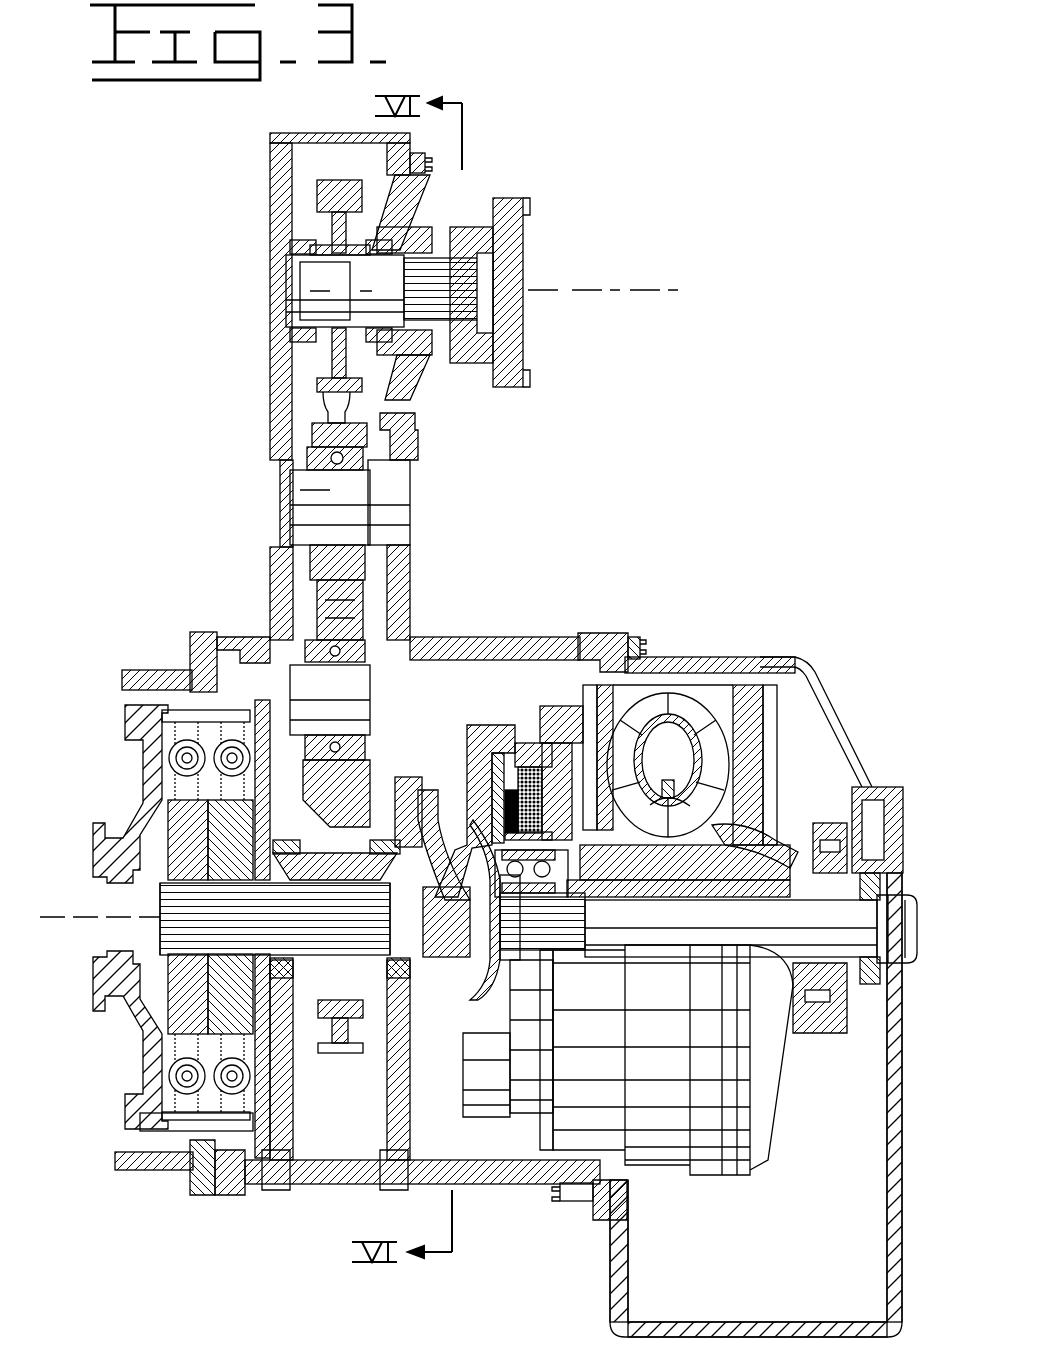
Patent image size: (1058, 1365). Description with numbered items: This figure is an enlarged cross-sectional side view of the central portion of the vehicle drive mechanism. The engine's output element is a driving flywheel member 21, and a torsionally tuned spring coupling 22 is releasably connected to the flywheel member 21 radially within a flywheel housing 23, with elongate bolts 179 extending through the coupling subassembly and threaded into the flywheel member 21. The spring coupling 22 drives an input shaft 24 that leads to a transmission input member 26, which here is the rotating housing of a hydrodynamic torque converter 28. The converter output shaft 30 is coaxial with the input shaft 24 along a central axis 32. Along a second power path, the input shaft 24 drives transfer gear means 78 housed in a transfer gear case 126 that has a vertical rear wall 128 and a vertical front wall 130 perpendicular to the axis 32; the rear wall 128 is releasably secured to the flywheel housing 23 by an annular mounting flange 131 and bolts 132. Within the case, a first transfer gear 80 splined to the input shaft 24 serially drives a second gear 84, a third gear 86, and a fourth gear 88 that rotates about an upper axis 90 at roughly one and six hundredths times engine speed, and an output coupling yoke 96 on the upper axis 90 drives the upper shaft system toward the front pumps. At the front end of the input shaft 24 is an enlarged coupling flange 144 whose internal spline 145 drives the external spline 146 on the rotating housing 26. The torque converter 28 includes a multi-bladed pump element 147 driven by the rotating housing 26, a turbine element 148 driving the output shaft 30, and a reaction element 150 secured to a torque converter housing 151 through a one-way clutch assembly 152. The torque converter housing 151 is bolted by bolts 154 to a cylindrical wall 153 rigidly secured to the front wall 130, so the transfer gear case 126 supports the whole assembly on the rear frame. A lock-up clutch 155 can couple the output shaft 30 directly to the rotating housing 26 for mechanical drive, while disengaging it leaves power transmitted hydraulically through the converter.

The flywheel member 21 is at (150, 764).
The torsionally tuned spring coupling 22 is at (160, 1074).
The flywheel housing 23 is at (140, 1172).
The input shaft 24 is at (125, 935).
The transmission input member 26 is at (570, 715).
The hydrodynamic torque converter 28 is at (675, 688).
The output shaft 30 is at (690, 918).
The central axis 32 is at (96, 908).
The transfer gear means 78 is at (388, 570).
The first transfer gear 80 is at (345, 1040).
The second gear 84 is at (330, 622).
The third gear 86 is at (335, 436).
The fourth gear 88 is at (350, 182).
The upper axis 90 is at (572, 283).
The output coupling yoke 96 is at (522, 240).
The transfer gear case 126 is at (345, 128).
The rear wall 128 is at (280, 382).
The front wall 130 is at (412, 448).
The annular mounting flange 131 is at (250, 1193).
The bolts 132 is at (192, 636).
The coupling flange 144 is at (486, 1118).
The internal spline 145 is at (478, 712).
The external spline 146 is at (492, 738).
The pump element 147 is at (720, 765).
The turbine element 148 is at (640, 720).
The reaction element 150 is at (676, 832).
The torque converter housing 151 is at (822, 697).
The one-way clutch assembly 152 is at (690, 927).
The cylindrical wall 153 is at (510, 632).
The bolts 154 is at (636, 636).
The lock-up clutch 155 is at (534, 745).
The bolts 179 is at (255, 1120).